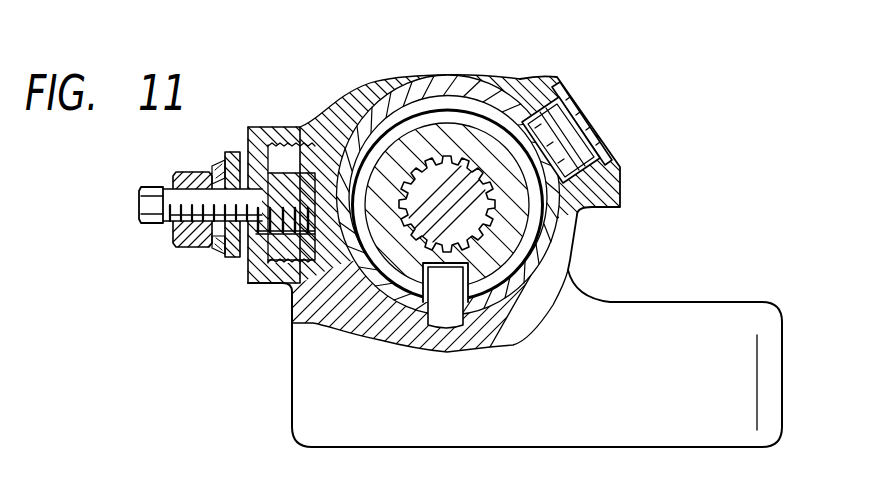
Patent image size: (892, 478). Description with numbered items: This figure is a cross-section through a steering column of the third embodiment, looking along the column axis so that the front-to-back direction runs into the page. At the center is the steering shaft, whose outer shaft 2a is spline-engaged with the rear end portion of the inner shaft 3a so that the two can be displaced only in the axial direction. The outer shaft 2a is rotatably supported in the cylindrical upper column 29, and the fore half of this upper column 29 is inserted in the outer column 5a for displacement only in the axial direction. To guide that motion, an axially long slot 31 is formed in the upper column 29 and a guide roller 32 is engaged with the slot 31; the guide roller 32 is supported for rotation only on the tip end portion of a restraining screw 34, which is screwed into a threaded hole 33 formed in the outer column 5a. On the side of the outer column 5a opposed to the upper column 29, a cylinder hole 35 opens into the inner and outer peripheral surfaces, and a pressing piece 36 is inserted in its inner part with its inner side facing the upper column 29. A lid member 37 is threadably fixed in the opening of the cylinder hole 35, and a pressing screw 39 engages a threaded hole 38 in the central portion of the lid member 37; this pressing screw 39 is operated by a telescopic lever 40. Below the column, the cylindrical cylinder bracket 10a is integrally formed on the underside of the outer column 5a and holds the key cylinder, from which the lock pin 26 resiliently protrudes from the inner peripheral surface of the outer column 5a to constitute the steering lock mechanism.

The outer shaft 2a is at (565, 236).
The inner shaft 3a is at (437, 160).
The outer column 5a is at (394, 92).
The cylinder bracket 10a is at (706, 318).
The lock pin 26 is at (450, 315).
The upper column 29 is at (462, 100).
The slot 31 is at (533, 137).
The guide roller 32 is at (590, 98).
The threaded hole 33 is at (606, 135).
The restraining screw 34 is at (556, 98).
The cylinder hole 35 is at (288, 120).
The pressing piece 36 is at (333, 147).
The lid member 37 is at (255, 276).
The threaded hole 38 is at (262, 178).
The pressing screw 39 is at (285, 265).
The telescopic lever 40 is at (228, 257).